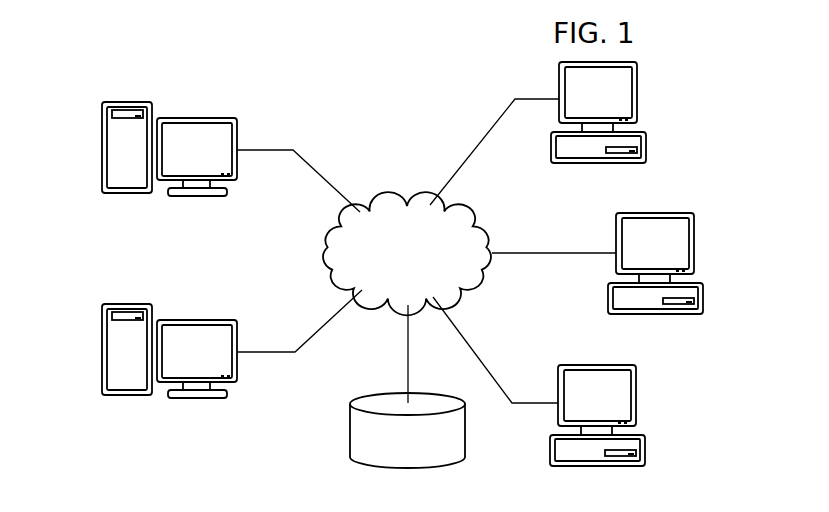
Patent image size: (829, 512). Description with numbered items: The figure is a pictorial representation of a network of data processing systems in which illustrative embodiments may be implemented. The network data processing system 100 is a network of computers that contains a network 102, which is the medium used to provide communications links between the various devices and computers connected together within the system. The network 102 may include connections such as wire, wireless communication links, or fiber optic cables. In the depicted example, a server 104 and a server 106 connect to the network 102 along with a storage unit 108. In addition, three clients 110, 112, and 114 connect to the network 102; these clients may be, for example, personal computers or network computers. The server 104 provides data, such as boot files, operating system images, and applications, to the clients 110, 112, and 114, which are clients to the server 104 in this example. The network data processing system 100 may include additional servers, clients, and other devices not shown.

The network data processing system 100 is at (300, 75).
The network 102 is at (403, 203).
The server 104 is at (102, 148).
The server 106 is at (102, 350).
The storage unit 108 is at (350, 432).
The client 110 is at (646, 147).
The client 112 is at (704, 298).
The client 114 is at (647, 452).